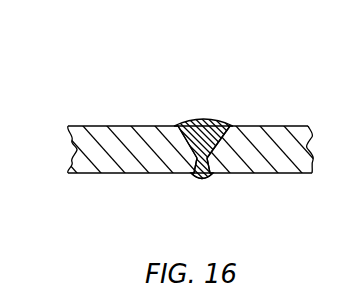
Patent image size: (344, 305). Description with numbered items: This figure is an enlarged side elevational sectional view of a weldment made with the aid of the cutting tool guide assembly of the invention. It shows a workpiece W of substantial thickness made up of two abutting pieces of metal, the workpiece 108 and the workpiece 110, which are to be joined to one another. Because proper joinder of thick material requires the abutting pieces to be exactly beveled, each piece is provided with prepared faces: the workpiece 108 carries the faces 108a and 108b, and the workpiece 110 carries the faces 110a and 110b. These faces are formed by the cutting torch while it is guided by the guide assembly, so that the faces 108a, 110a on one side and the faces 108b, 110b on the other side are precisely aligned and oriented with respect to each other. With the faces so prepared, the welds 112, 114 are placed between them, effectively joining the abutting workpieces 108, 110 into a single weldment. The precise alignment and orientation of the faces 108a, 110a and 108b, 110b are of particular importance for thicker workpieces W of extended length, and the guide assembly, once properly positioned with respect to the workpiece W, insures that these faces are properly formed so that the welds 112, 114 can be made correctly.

The workpiece 108 is at (262, 117).
The workpiece 110 is at (87, 119).
The workpiece face 108a is at (218, 122).
The workpiece face 110a is at (182, 122).
The workpiece face 108b is at (203, 180).
The workpiece face 110b is at (195, 177).
The weld 112 is at (190, 122).
The weld 114 is at (200, 178).
The workpiece W is at (296, 121).